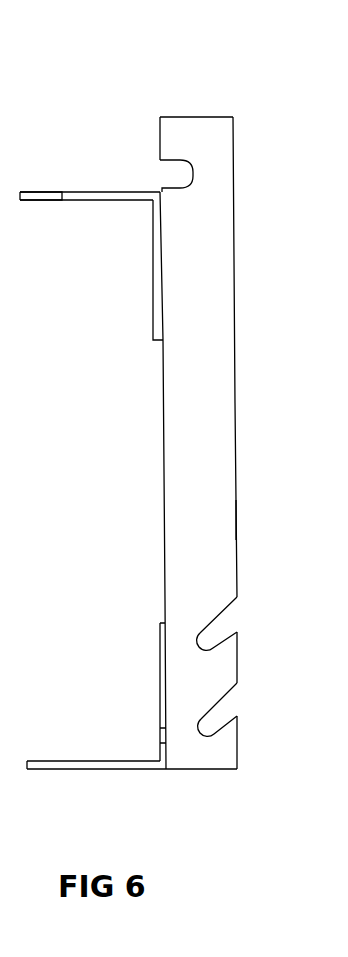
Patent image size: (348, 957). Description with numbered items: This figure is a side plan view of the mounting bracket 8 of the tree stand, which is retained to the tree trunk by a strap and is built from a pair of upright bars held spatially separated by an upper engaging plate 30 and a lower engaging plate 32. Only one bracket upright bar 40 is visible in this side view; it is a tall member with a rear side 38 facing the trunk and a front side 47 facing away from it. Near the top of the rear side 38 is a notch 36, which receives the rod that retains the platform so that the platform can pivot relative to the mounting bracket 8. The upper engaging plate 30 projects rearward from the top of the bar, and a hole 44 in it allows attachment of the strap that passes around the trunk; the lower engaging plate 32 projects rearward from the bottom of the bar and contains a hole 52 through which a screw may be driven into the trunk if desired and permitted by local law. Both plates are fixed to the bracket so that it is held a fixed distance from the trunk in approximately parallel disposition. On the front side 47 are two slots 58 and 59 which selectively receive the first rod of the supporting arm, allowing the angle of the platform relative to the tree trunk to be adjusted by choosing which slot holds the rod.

The mounting bracket 8 is at (172, 780).
The upper engaging plate 30 is at (107, 192).
The lower engaging plate 32 is at (62, 770).
The notch 36 is at (177, 178).
The rear side 38 is at (163, 453).
The bracket upright bar 40 is at (235, 403).
The hole 44 is at (55, 192).
The front side 47 is at (237, 520).
The hole 52 is at (160, 732).
The slot 58 is at (223, 613).
The slot 59 is at (227, 702).